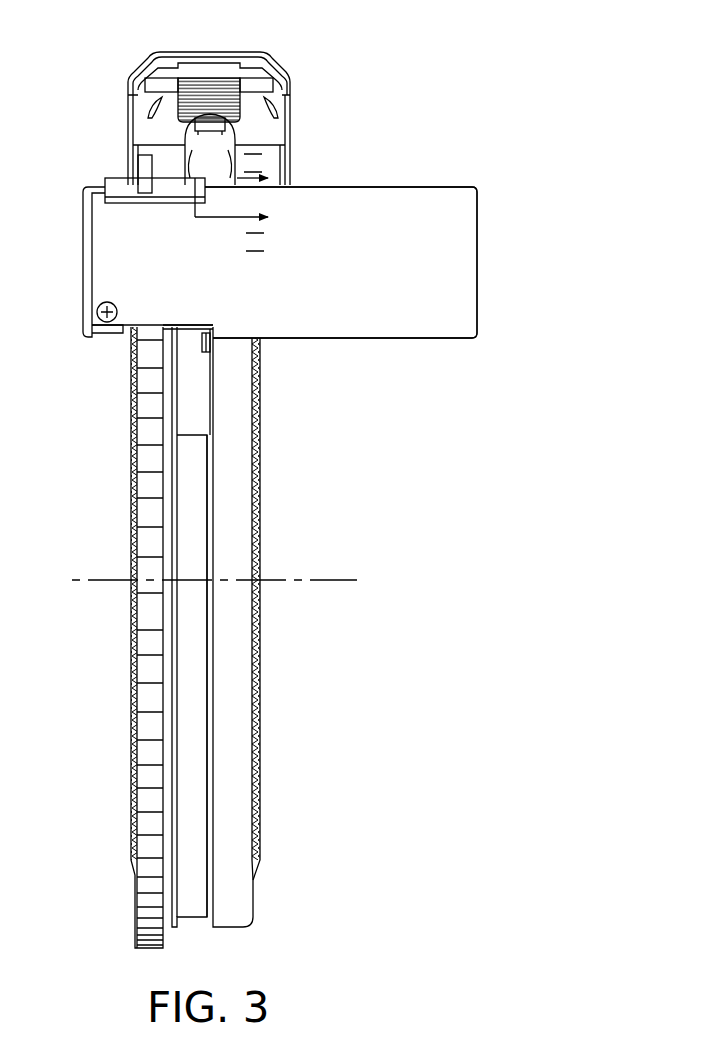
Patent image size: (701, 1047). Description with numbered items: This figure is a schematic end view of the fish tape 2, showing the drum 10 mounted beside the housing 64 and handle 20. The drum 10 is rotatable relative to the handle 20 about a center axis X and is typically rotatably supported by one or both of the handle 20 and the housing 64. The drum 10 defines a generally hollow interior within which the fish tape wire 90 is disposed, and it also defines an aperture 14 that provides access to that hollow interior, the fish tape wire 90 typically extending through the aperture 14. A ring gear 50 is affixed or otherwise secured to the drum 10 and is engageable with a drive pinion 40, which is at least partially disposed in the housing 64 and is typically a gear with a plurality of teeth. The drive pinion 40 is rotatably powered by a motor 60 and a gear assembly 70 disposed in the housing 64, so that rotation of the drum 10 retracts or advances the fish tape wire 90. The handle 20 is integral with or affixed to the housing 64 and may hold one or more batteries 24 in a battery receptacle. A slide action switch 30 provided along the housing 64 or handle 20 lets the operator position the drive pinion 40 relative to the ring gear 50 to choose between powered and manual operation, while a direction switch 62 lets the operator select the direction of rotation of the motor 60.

The fish tape 2 is at (362, 80).
The drum 10 is at (238, 753).
The aperture 14 is at (210, 398).
The handle 20 is at (158, 143).
The batteries 24 is at (286, 58).
The slide action switch 30 is at (122, 190).
The drive pinion 40 is at (405, 368).
The ring gear 50 is at (148, 702).
The motor 60 is at (341, 262).
The direction switch 62 is at (205, 125).
The housing 64 is at (397, 208).
The gear assembly 70 is at (341, 262).
The fish tape wire 90 is at (205, 340).